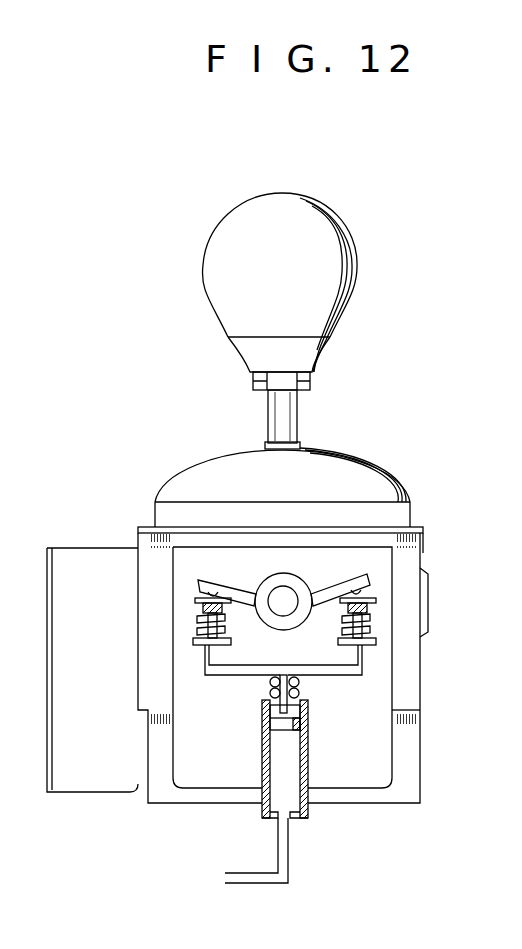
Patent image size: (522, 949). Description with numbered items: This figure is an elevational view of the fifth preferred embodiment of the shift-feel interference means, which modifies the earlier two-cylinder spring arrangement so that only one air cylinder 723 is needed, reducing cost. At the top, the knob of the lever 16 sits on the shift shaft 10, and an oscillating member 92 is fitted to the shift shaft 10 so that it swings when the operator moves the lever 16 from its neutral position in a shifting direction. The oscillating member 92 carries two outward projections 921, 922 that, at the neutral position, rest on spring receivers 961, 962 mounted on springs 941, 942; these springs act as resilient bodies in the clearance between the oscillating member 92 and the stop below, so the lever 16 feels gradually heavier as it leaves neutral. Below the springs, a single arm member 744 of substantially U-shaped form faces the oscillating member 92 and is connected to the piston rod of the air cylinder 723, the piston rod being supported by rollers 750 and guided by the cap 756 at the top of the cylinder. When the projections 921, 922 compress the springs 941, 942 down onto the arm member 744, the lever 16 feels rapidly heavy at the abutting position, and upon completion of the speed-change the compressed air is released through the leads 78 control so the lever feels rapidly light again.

The shift shaft 10 is at (279, 597).
The lever 16 is at (283, 417).
The electrical leads 78 is at (230, 872).
The oscillating member 92 is at (386, 565).
The projection of the oscillating member 921 is at (199, 588).
The projection of the oscillating member 922 is at (362, 590).
The spring 941 is at (290, 654).
The spring 942 is at (376, 629).
The spring receiver 961 is at (196, 606).
The spring receiver 962 is at (376, 602).
The arm member 744 is at (354, 676).
The rollers 750 is at (269, 684).
The plunger cap 756 is at (303, 716).
The air cylinder 723 is at (300, 820).